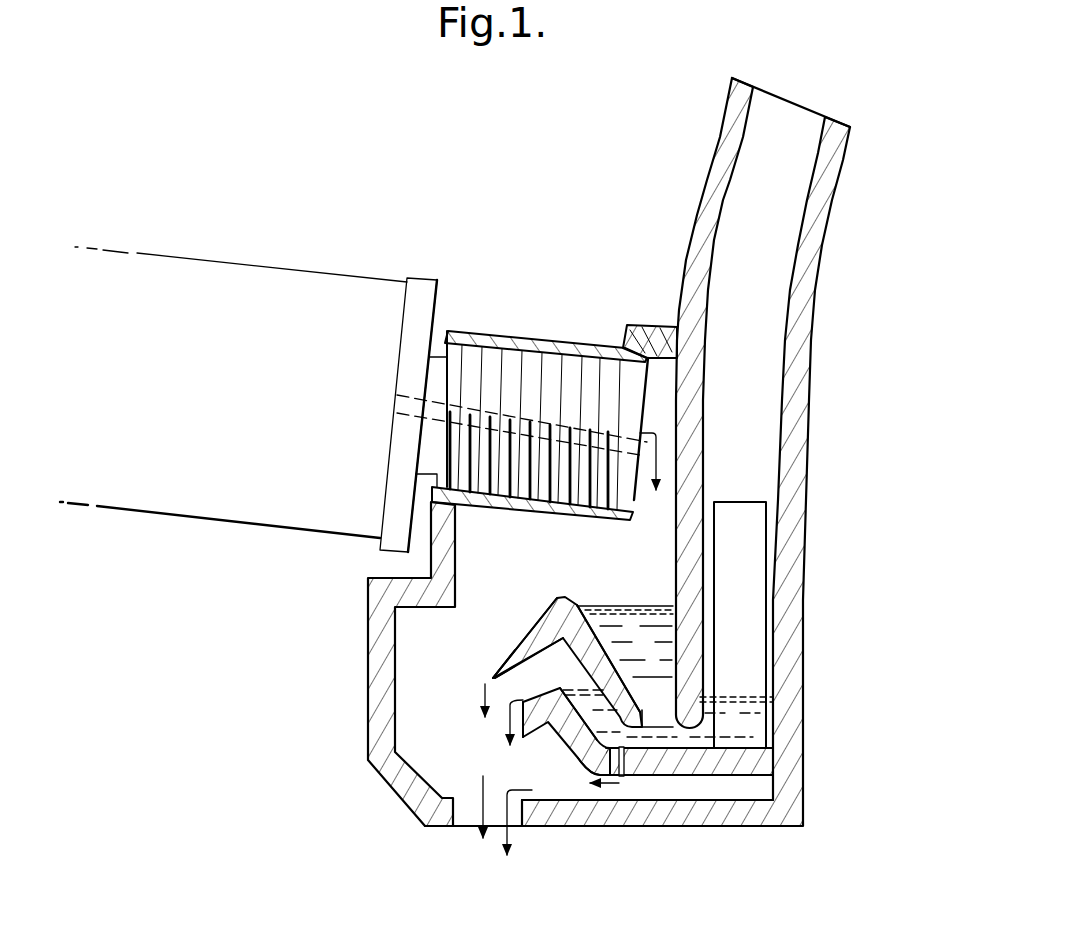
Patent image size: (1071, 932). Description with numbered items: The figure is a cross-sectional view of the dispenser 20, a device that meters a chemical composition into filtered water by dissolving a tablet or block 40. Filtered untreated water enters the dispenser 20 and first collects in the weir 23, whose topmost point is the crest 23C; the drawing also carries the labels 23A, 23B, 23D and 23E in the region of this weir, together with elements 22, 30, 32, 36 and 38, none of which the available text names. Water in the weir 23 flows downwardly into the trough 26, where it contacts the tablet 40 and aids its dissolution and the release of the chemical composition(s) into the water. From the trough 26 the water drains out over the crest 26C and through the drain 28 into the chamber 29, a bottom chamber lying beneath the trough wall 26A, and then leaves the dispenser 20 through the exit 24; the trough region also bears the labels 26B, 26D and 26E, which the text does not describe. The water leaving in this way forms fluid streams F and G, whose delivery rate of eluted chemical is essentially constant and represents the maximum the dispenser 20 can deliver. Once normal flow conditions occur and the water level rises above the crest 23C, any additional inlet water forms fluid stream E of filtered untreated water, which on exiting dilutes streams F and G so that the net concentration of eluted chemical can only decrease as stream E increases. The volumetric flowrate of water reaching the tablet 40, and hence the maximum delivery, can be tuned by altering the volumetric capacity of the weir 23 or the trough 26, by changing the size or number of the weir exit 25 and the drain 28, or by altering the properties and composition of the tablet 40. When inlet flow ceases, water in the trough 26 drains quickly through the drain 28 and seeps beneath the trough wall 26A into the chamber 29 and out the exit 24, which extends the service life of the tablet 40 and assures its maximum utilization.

The dispenser 20 is at (870, 242).
The connecting wall portion 22 is at (660, 362).
The weir 23 is at (650, 597).
The inlet channel 23A is at (672, 373).
The chamber wall portion 23B is at (604, 640).
The crest 23C is at (565, 600).
The baffle arm 23D is at (523, 638).
The baffle tip 23E is at (488, 676).
The exit 24 is at (470, 813).
The weir exit 25 is at (787, 168).
The trough 26 is at (698, 746).
The trough wall 26A is at (723, 767).
The bend 26B is at (580, 750).
The crest 26C is at (560, 677).
The lower baffle slope 26D is at (550, 688).
The lower baffle flange 26E is at (522, 705).
The drain 28 is at (630, 757).
The chamber 29 is at (760, 788).
The inlet pipe upper wall 30 is at (257, 265).
The inlet pipe lower wall 32 is at (188, 517).
The filter insert 36 is at (500, 372).
The filter fins 38 is at (615, 440).
The tablet 40 is at (753, 583).
The fluid stream E is at (527, 634).
The fluid stream F is at (517, 733).
The fluid stream G is at (619, 788).